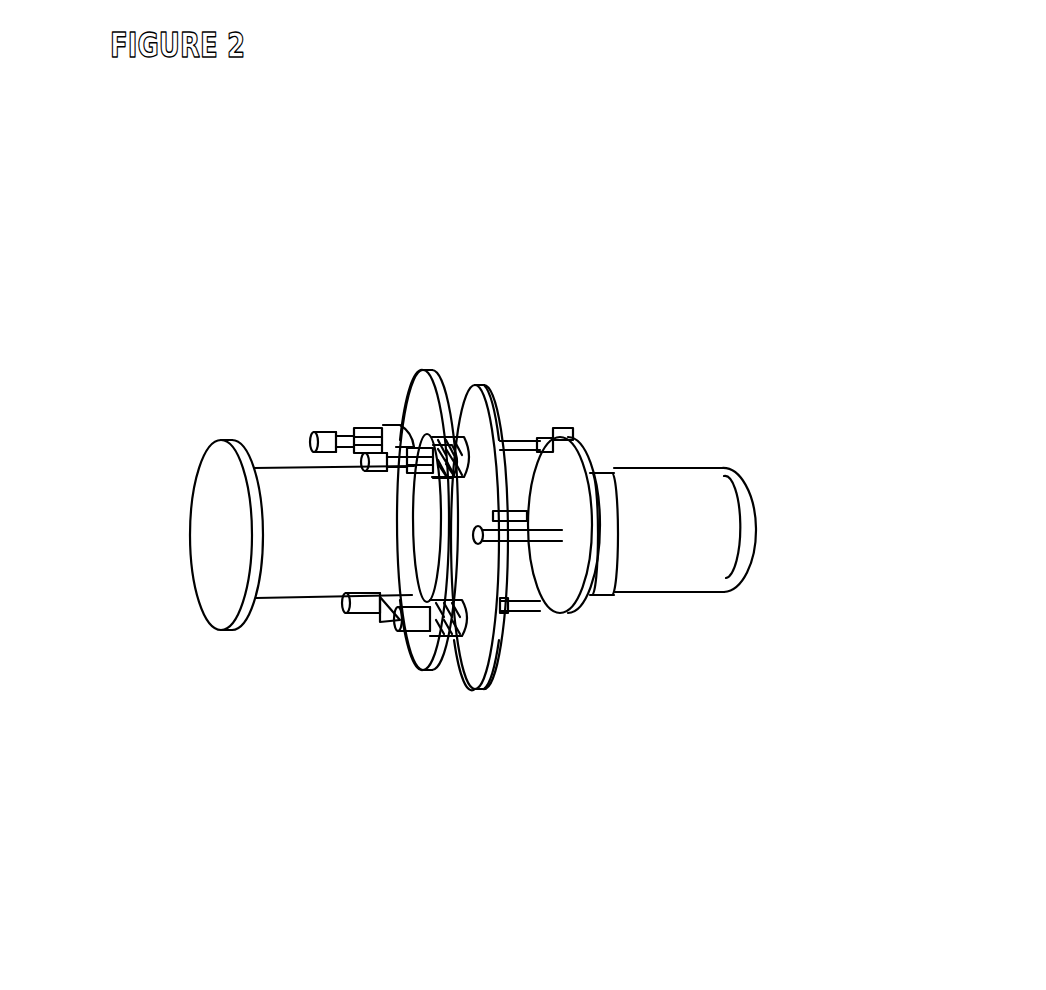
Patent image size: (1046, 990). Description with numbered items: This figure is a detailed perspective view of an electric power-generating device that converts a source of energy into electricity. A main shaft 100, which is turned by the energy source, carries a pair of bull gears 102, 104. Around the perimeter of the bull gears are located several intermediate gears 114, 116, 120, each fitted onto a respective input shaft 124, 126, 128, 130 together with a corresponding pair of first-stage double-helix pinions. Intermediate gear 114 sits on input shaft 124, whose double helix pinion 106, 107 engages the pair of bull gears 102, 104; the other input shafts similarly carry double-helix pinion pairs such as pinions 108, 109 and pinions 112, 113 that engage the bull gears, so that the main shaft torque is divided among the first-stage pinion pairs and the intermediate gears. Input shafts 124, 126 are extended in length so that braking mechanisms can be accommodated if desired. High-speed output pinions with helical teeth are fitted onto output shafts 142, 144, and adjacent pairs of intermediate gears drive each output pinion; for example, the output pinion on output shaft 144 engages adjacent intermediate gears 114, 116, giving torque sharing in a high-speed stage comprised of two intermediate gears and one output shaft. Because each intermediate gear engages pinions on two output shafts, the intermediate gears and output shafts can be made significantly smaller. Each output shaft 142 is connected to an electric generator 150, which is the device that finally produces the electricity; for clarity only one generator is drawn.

The main shaft 100 is at (225, 532).
The bull gear 102 is at (272, 682).
The bull gear 104 is at (619, 684).
The double helix pinion 106 is at (342, 416).
The double helix pinion 107 is at (528, 437).
The double helix pinion 108 is at (245, 359).
The double helix pinion 109 is at (325, 354).
The double helix pinion 112 is at (368, 735).
The double helix pinion 113 is at (530, 761).
The intermediate gear 114 is at (582, 335).
The intermediate gear 116 is at (480, 267).
The intermediate gear 120 is at (591, 735).
The input shaft 124 is at (264, 440).
The input shaft 126 is at (222, 381).
The input shaft 128 is at (231, 642).
The input shaft 130 is at (352, 707).
The output shaft 142 is at (617, 606).
The output shaft 144 is at (610, 455).
The generator 150 is at (757, 562).